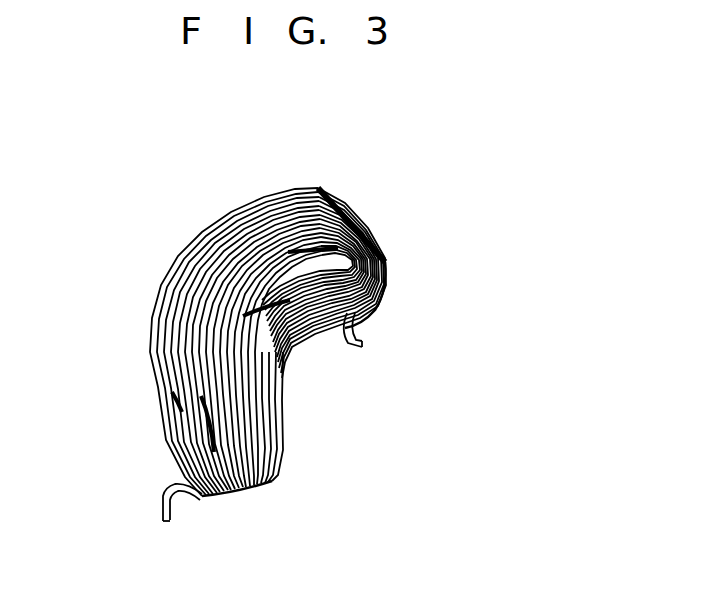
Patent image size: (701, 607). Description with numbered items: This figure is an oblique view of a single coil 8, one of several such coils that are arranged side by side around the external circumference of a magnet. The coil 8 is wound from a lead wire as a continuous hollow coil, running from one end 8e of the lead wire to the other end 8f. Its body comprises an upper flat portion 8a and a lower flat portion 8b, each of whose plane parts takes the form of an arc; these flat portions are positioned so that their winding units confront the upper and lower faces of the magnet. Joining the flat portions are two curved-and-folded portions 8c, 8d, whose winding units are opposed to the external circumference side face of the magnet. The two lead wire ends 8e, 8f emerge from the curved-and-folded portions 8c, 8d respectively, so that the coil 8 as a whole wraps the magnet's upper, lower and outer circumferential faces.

The coil 8 is at (328, 182).
The upper flat portion 8a is at (218, 263).
The lower flat portion 8b is at (300, 312).
The curved-and-folded portion 8c is at (387, 265).
The curved-and-folded portion 8d is at (260, 480).
The one end of the lead wire 8e is at (366, 343).
The other end of the lead wire 8f is at (162, 520).